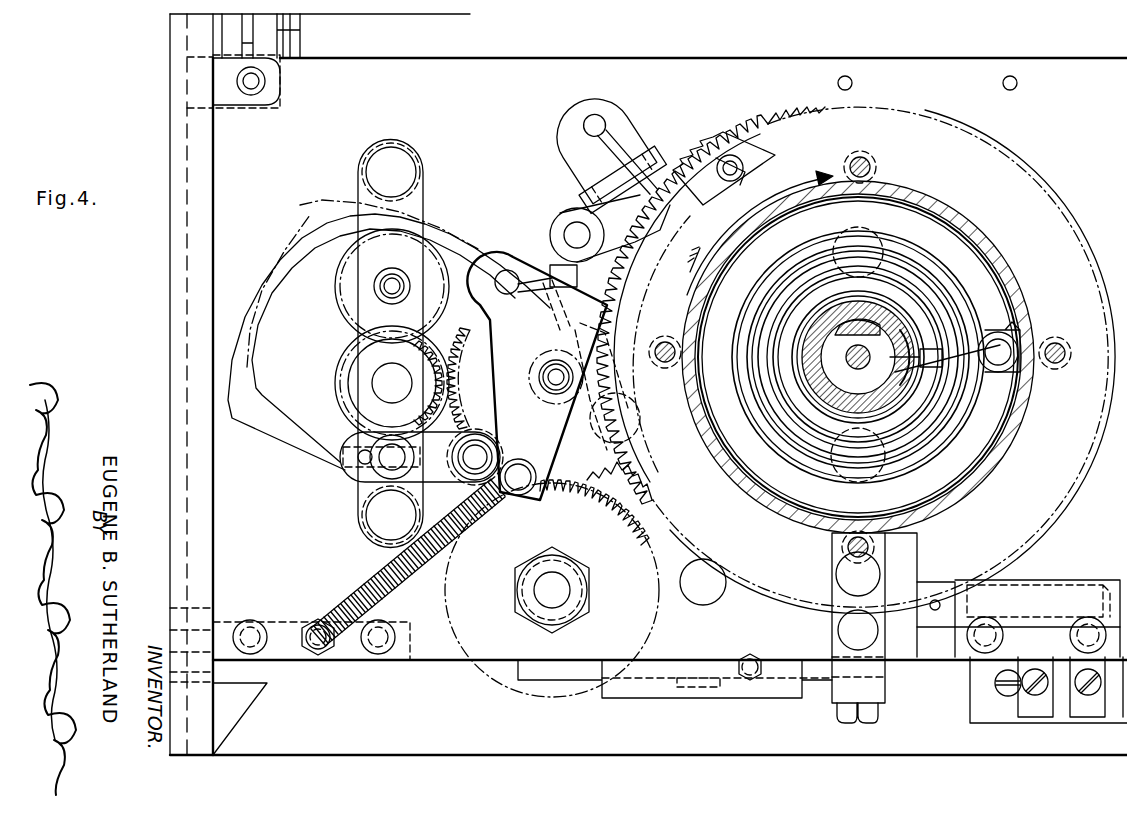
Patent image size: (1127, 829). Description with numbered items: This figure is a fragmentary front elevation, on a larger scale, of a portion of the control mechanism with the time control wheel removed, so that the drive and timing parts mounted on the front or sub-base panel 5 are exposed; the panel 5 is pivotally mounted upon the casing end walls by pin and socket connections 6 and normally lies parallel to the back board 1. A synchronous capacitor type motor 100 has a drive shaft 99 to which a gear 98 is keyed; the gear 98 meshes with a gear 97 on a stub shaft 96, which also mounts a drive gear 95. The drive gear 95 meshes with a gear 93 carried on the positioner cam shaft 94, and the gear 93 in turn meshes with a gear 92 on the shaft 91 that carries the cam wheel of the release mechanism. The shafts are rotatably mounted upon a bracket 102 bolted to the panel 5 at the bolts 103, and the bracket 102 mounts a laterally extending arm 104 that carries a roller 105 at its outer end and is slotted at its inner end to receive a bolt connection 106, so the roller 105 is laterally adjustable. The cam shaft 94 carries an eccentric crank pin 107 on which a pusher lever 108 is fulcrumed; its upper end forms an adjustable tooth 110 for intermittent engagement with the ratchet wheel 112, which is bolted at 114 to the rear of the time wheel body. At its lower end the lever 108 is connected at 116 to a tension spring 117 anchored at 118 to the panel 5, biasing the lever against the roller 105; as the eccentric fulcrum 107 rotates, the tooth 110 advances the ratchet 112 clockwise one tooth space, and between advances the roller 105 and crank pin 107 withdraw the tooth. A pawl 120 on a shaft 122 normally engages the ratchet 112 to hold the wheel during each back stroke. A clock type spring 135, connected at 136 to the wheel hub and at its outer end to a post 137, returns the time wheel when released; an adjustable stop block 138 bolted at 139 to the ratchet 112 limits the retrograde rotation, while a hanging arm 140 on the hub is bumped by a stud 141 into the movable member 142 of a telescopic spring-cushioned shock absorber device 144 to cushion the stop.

The back board 1 is at (430, 727).
The sub-base panel 5 is at (438, 644).
The pin and socket connections 6 is at (178, 645).
The shaft 91 is at (560, 598).
The gear 92 is at (648, 610).
The gear 93 is at (628, 472).
The positioner cam shaft 94 is at (560, 378).
The drive gear 95 is at (447, 376).
The stub shaft 96 is at (390, 391).
The gear 97 is at (346, 370).
The gear 98 is at (343, 318).
The drive shaft 99 is at (388, 286).
The synchronous capacitor type motor 100 is at (315, 250).
The bracket 102 is at (425, 214).
The bolts 103 is at (405, 172).
The laterally extending arm 104 is at (437, 478).
The roller 105 is at (500, 454).
The bolt connection 106 is at (350, 470).
The crank pin 107 is at (562, 418).
The pusher lever 108 is at (520, 412).
The adjustable tooth 110 is at (605, 302).
The ratchet wheel 112 is at (781, 112).
The bolts 114 is at (878, 167).
The connection 116 is at (518, 496).
The tension spring 117 is at (340, 606).
The connection 118 is at (320, 652).
The pawl 120 is at (638, 172).
The shaft 122 is at (564, 236).
The clock type spring 135 is at (950, 290).
The connection 136 is at (915, 365).
The post 137 is at (1012, 345).
The adjustable stop block 138 is at (703, 150).
The bolt 139 is at (760, 215).
The arm 140 is at (905, 565).
The stud 141 is at (830, 612).
The movable member 142 is at (925, 592).
The shock absorber device 144 is at (1040, 605).